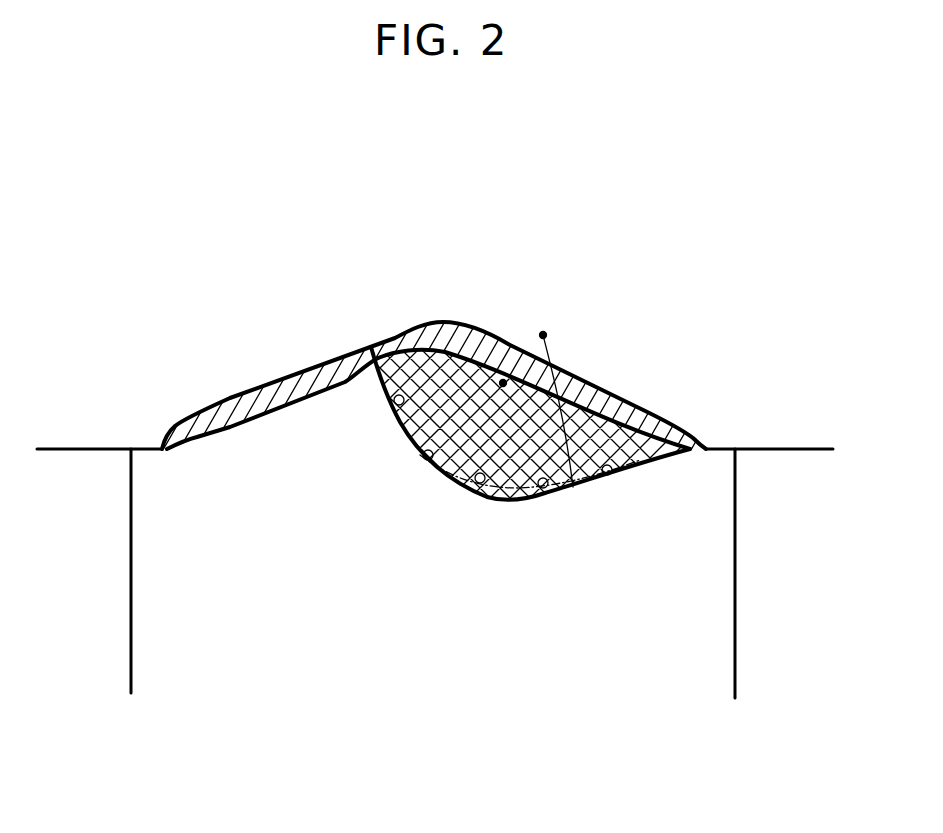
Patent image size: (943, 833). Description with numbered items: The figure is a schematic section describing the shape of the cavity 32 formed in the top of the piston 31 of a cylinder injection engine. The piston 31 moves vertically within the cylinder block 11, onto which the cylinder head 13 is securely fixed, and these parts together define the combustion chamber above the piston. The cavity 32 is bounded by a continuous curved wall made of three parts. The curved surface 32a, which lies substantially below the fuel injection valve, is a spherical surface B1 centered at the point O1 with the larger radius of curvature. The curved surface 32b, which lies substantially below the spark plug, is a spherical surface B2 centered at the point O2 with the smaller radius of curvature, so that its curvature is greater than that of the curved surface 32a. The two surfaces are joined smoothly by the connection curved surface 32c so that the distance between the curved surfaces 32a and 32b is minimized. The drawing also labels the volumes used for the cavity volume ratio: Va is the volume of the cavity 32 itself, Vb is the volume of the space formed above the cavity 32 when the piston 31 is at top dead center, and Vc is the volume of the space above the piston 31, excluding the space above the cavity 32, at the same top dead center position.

The cylinder block 11 is at (84, 567).
The cylinder head 13 is at (157, 290).
The piston 31 is at (740, 559).
The cavity 32 is at (483, 494).
The curved surface 32a is at (617, 476).
The curved surface 32b is at (430, 473).
The connection curved surface 32c is at (548, 498).
The volume of the cavity Va is at (568, 495).
The volume of space above the cavity Vb is at (462, 340).
The volume of space above the piston excluding the cavity space Vc is at (290, 387).
The center point of spherical surface B1 O1 is at (563, 326).
The center point of spherical surface B2 O2 is at (503, 380).
The spherical surface B1 is at (640, 407).
The spherical surface B2 is at (400, 418).